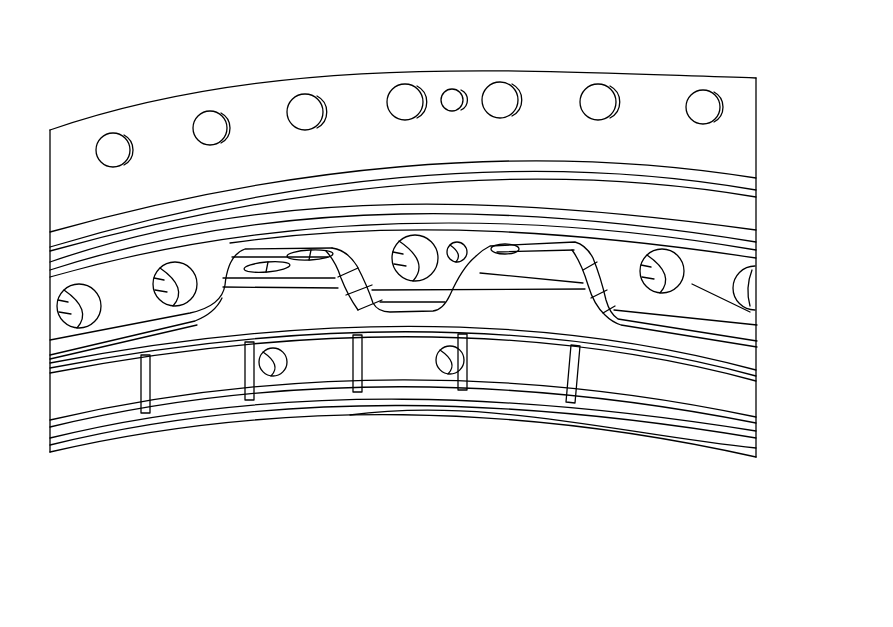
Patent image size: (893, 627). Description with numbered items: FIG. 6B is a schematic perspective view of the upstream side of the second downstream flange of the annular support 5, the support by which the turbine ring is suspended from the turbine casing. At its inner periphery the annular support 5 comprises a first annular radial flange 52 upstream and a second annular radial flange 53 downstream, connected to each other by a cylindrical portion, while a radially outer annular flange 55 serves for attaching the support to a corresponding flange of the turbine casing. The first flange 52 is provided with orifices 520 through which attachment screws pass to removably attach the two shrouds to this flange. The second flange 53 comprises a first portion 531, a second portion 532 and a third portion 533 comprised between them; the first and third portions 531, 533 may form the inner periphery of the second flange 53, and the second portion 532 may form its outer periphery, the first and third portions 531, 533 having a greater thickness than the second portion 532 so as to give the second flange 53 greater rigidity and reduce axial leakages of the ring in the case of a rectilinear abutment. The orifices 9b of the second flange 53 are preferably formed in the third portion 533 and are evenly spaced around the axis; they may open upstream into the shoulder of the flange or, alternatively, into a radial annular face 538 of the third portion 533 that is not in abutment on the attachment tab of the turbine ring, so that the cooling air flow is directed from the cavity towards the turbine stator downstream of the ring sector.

The annular support 5 is at (770, 160).
The radially outer annular flange 55 is at (654, 82).
The first annular radial flange 52 is at (716, 265).
The orifices 520 is at (750, 283).
The radial annular face 538 is at (735, 373).
The second annular radial flange 53 is at (442, 417).
The first portion 531 is at (757, 437).
The second portion 532 is at (672, 373).
The third portion 533 is at (640, 433).
The orifices 9b is at (567, 363).